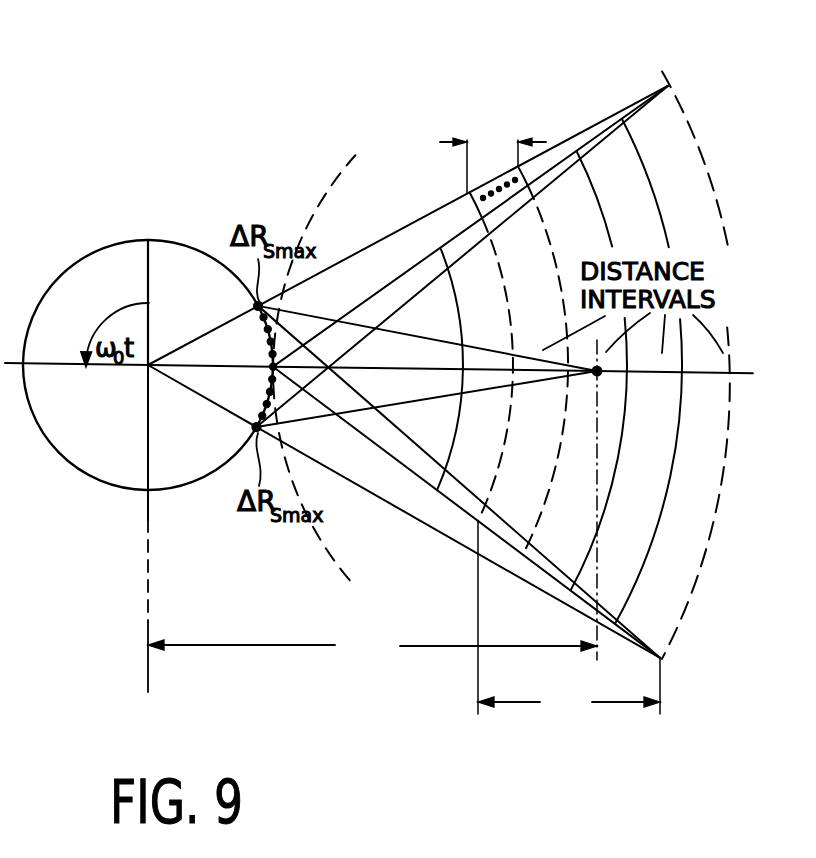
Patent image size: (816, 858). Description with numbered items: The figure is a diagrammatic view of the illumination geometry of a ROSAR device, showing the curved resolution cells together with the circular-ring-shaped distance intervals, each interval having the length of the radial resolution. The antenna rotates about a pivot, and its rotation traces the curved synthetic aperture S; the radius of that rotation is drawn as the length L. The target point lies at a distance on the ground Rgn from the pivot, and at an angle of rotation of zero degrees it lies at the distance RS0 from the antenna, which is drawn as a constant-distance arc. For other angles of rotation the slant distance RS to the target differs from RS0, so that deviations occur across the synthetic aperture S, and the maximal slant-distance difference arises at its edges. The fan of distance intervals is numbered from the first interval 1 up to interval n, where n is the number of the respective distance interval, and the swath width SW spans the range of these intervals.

The first distance interval 1 is at (491, 166).
The number of the respective distance interval n is at (638, 159).
The antenna rotation radius L is at (162, 302).
The synthetic aperture S is at (266, 318).
The swath width SW is at (569, 619).
The distance on the ground Rgn is at (372, 505).
The slant distance RS is at (427, 337).
The distance from the antenna at zero angle of rotation RS0 is at (303, 63).